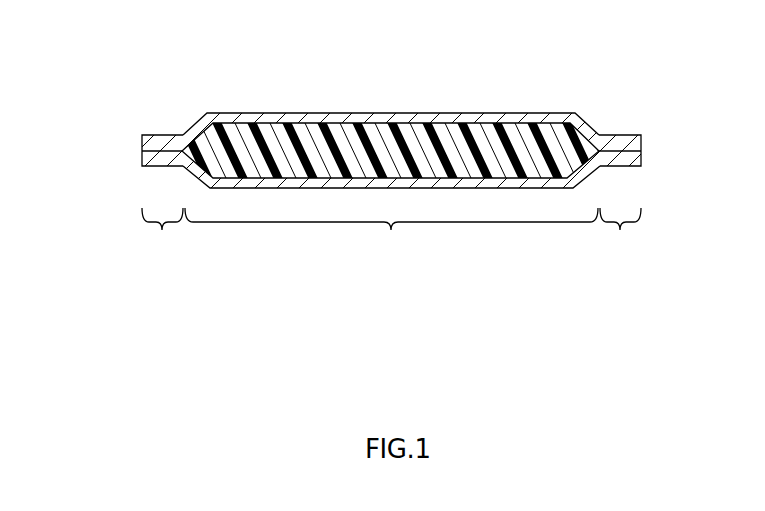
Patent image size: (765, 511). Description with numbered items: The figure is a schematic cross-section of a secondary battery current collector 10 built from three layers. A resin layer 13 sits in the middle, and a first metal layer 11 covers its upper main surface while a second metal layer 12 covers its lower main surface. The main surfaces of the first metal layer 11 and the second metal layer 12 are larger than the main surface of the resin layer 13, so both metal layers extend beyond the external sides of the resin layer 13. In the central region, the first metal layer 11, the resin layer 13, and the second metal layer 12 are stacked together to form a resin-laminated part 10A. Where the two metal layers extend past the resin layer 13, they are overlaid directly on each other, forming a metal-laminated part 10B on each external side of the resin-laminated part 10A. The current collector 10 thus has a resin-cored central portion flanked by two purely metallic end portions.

The secondary battery current collector 10 is at (370, 148).
The first metal layer 11 is at (317, 113).
The second metal layer 12 is at (198, 177).
The resin layer 13 is at (452, 124).
The resin-laminated part 10A is at (391, 235).
The metal-laminated part 10B is at (393, 235).